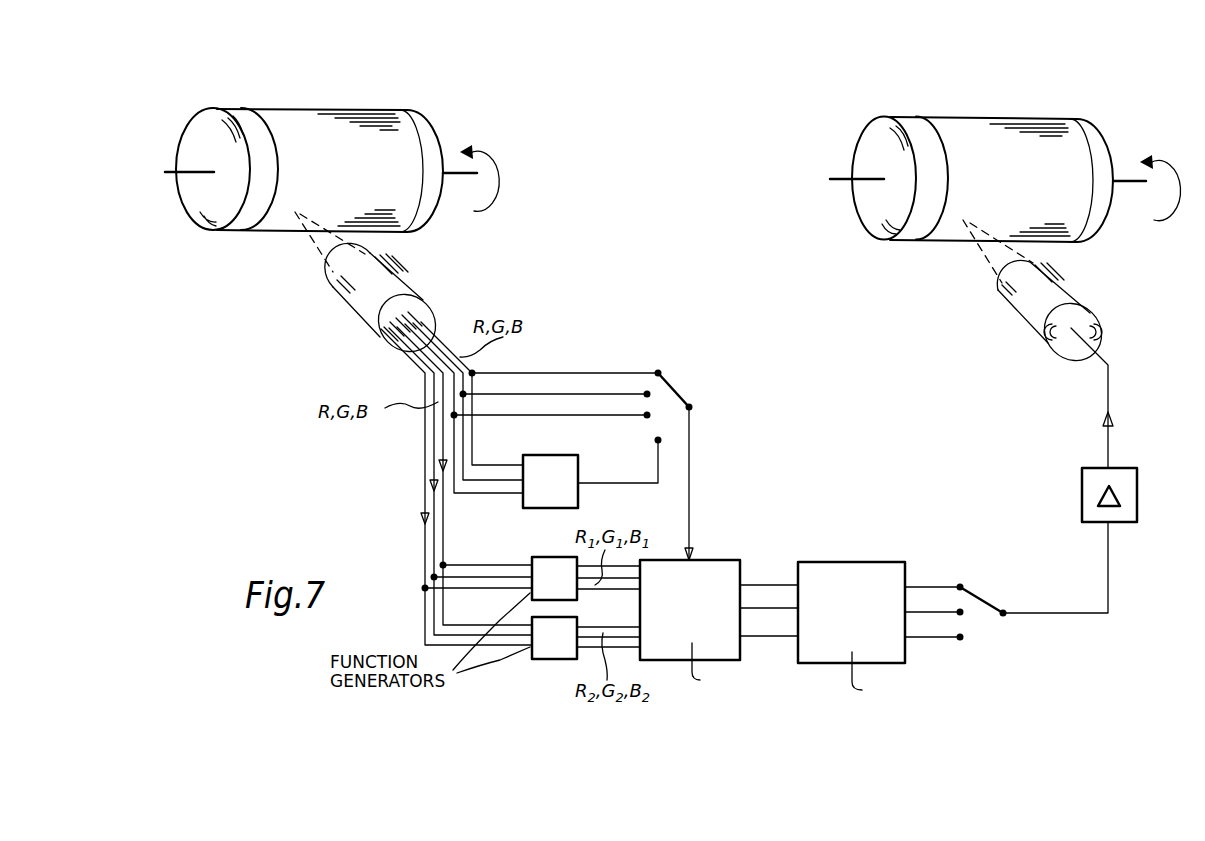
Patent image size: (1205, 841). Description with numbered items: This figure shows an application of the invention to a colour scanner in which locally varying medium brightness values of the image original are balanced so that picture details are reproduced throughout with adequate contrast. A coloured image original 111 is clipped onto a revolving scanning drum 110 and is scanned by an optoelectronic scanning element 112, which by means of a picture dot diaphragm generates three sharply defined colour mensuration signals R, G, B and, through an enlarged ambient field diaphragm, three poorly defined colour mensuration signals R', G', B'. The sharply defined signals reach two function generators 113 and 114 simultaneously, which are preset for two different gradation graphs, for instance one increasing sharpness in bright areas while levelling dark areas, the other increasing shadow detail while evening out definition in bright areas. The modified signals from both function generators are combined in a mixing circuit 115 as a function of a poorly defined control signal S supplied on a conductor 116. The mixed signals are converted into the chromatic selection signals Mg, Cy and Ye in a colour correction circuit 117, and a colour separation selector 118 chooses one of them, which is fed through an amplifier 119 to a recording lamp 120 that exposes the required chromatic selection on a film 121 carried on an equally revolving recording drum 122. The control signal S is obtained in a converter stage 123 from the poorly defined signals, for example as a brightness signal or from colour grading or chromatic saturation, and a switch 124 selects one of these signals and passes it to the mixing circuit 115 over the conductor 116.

The scanning drum 110 is at (440, 138).
The coloured image original 111 is at (345, 140).
The optoelectronic scanning element 112 is at (383, 287).
The function generator 113 is at (547, 565).
The function generator 114 is at (548, 637).
The mixing circuit 115 is at (725, 572).
The conductor 116 is at (692, 473).
The colour correction circuit 117 is at (847, 573).
The colour separation selector 118 is at (987, 593).
The amplifier 119 is at (1090, 488).
The recording lamp 120 is at (1030, 302).
The film 121 is at (1005, 150).
The recording drum 122 is at (1100, 153).
The converter stage 123 is at (567, 470).
The switch 124 is at (680, 390).